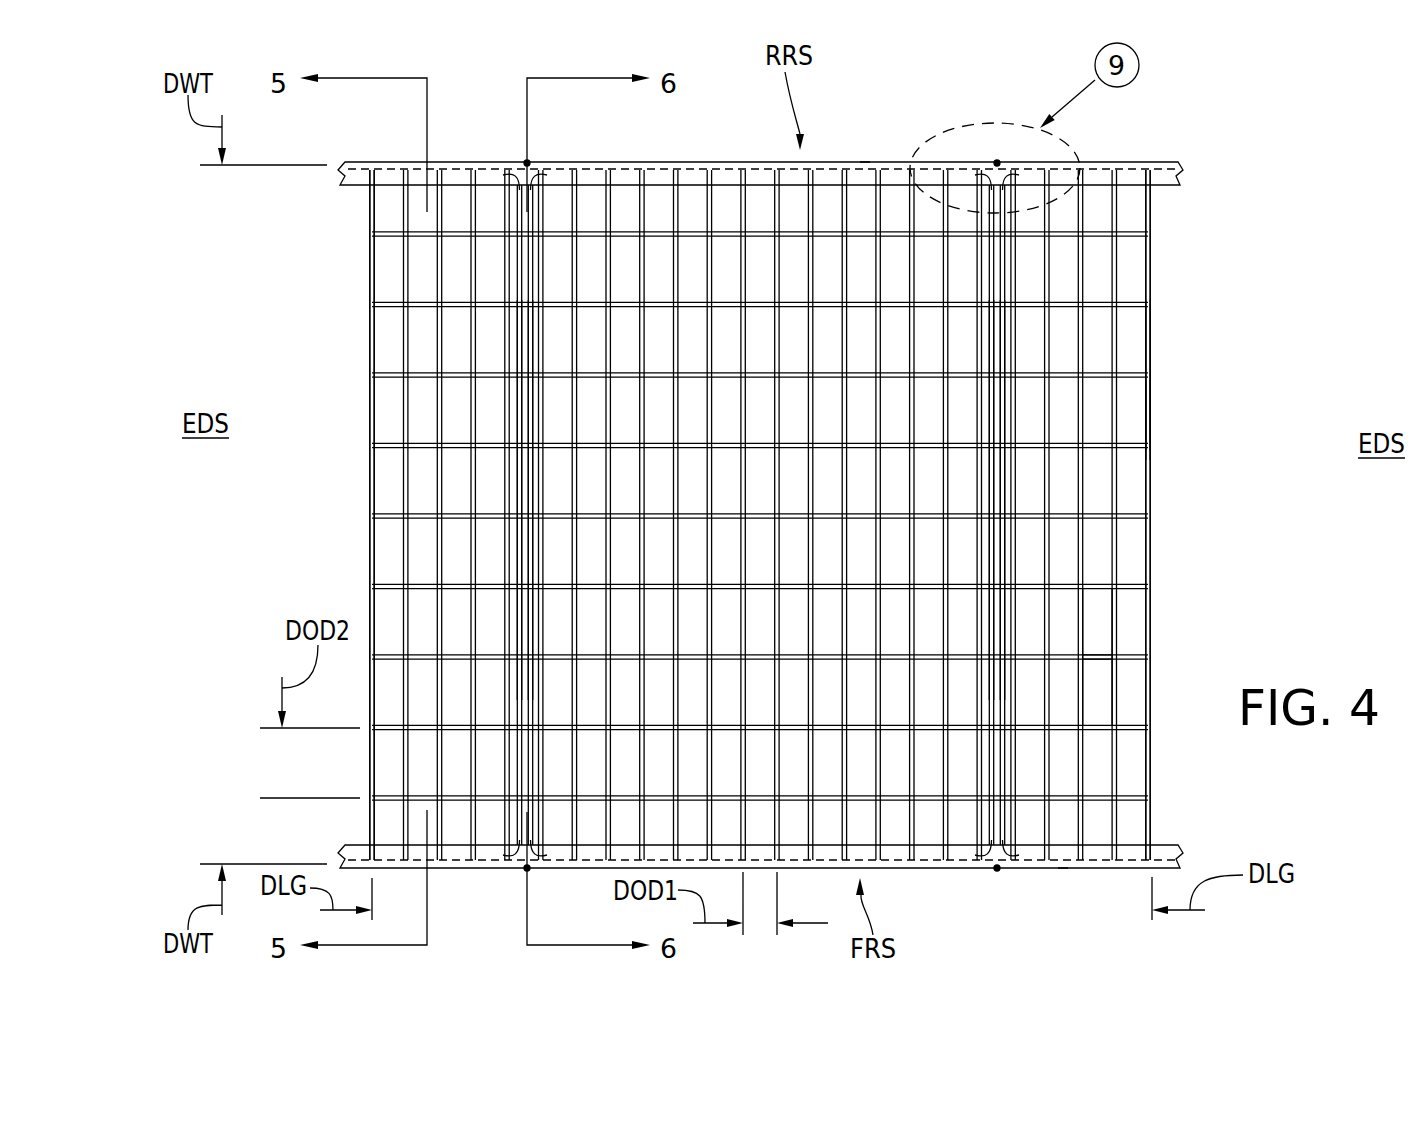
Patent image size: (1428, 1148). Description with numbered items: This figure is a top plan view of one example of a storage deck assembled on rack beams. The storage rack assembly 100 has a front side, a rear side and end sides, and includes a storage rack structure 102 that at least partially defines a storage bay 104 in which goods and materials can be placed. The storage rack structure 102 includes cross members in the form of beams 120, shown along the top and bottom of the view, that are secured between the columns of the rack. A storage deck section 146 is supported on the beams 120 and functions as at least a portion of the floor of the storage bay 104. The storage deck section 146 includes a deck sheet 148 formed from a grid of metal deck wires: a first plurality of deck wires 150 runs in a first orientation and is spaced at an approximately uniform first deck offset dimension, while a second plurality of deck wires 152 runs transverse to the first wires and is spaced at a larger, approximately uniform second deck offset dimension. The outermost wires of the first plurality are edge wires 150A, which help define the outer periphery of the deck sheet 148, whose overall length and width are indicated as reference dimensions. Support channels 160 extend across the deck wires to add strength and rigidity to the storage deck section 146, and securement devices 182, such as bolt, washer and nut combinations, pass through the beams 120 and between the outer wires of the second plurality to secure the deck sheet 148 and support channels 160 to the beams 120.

The storage rack assembly 100 is at (1308, 154).
The storage rack structure 102 is at (1230, 145).
The storage bay 104 is at (1234, 250).
The beam 120 is at (1165, 168).
The storage deck section 146 is at (1198, 371).
The deck sheet 148 is at (1168, 420).
The first plurality of deck wires 150 is at (915, 638).
The edge wires 150A is at (372, 345).
The second plurality of deck wires 152 is at (1102, 723).
The support channel 160 is at (503, 474).
The securement device 182 is at (527, 160).